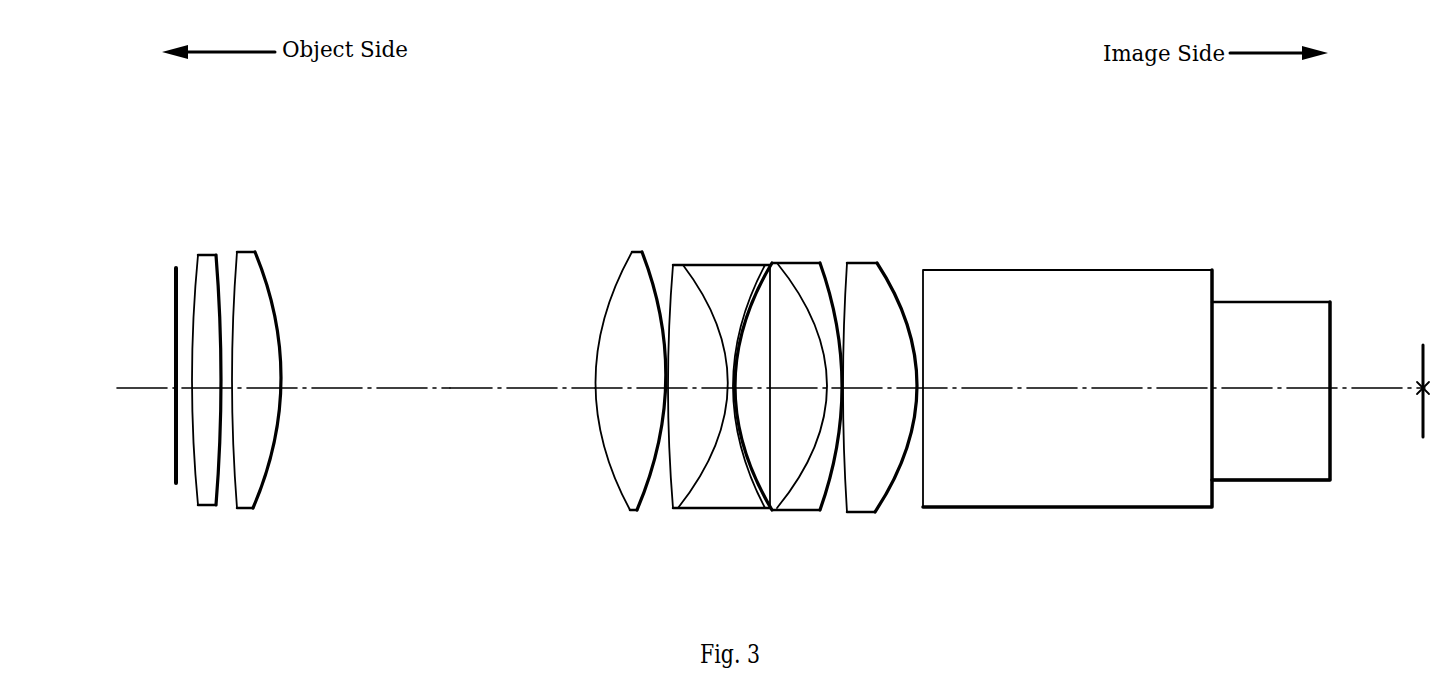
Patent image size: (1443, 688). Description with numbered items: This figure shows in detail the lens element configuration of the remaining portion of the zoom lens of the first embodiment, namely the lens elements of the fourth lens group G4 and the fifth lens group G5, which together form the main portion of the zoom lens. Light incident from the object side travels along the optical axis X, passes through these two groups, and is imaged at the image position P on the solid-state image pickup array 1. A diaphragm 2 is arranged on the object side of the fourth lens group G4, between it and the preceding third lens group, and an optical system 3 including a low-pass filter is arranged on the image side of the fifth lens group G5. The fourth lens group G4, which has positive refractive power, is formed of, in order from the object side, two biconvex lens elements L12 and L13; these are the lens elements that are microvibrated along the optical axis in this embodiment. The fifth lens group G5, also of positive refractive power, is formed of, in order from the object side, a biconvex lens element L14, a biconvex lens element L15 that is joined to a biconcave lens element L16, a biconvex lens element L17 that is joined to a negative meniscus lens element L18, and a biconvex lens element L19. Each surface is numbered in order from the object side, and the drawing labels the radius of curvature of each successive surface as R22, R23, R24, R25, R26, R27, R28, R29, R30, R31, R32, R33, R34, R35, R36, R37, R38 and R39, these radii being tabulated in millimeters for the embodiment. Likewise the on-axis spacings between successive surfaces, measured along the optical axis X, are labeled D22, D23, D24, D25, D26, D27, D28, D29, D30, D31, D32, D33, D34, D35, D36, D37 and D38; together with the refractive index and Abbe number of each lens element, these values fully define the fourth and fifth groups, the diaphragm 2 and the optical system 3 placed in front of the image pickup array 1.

The fourth lens group G4 is at (287, 195).
The fifth lens group G5 is at (906, 205).
The solid-state image pickup array 1 is at (1422, 353).
The diaphragm 2 is at (144, 375).
The optical system 3 is at (1149, 394).
The image position P is at (1423, 390).
The optical axis X is at (460, 392).
The biconvex lens element L12 is at (171, 379).
The biconvex lens element L13 is at (247, 373).
The biconvex lens element L14 is at (609, 391).
The biconvex lens element L15 is at (693, 375).
The biconcave lens element L16 is at (739, 393).
The biconvex lens element L17 is at (781, 378).
The negative meniscus lens element L18 is at (836, 378).
The biconvex lens element L19 is at (903, 390).
The radius of curvature of lens surface R22 is at (176, 292).
The radius of curvature of lens surface R23 is at (197, 277).
The radius of curvature of lens surface R24 is at (215, 258).
The radius of curvature of lens surface R25 is at (228, 268).
The radius of curvature of lens surface R26 is at (266, 268).
The radius of curvature of lens surface R27 is at (612, 300).
The radius of curvature of lens surface R28 is at (633, 256).
The radius of curvature of lens surface R29 is at (667, 287).
The radius of curvature of lens surface R30 is at (692, 278).
The radius of curvature of lens surface R31 is at (743, 292).
The radius of curvature of lens surface R32 is at (756, 268).
The radius of curvature of lens surface R33 is at (793, 290).
The radius of curvature of lens surface R34 is at (826, 265).
The radius of curvature of lens surface R35 is at (843, 272).
The radius of curvature of lens surface R36 is at (913, 290).
The radius of curvature of lens surface R37 is at (922, 285).
The radius of curvature of lens surface R38 is at (1215, 320).
The radius of curvature of lens surface R39 is at (1333, 318).
The on-axis spacing between surfaces D22 is at (181, 386).
The on-axis spacing between surfaces D23 is at (200, 396).
The on-axis spacing between surfaces D24 is at (232, 371).
The on-axis spacing between surfaces D25 is at (256, 390).
The on-axis spacing between surfaces D26 is at (345, 392).
The on-axis spacing between surfaces D27 is at (605, 392).
The on-axis spacing between surfaces D28 is at (665, 385).
The on-axis spacing between surfaces D29 is at (666, 391).
The on-axis spacing between surfaces D30 is at (726, 383).
The on-axis spacing between surfaces D31 is at (748, 414).
The on-axis spacing between surfaces D32 is at (755, 393).
The on-axis spacing between surfaces D33 is at (842, 395).
The on-axis spacing between surfaces D34 is at (850, 385).
The on-axis spacing between surfaces D35 is at (922, 393).
The on-axis spacing between surfaces D36 is at (925, 385).
The on-axis spacing between surfaces D37 is at (1073, 393).
The on-axis spacing between surfaces D38 is at (1266, 393).